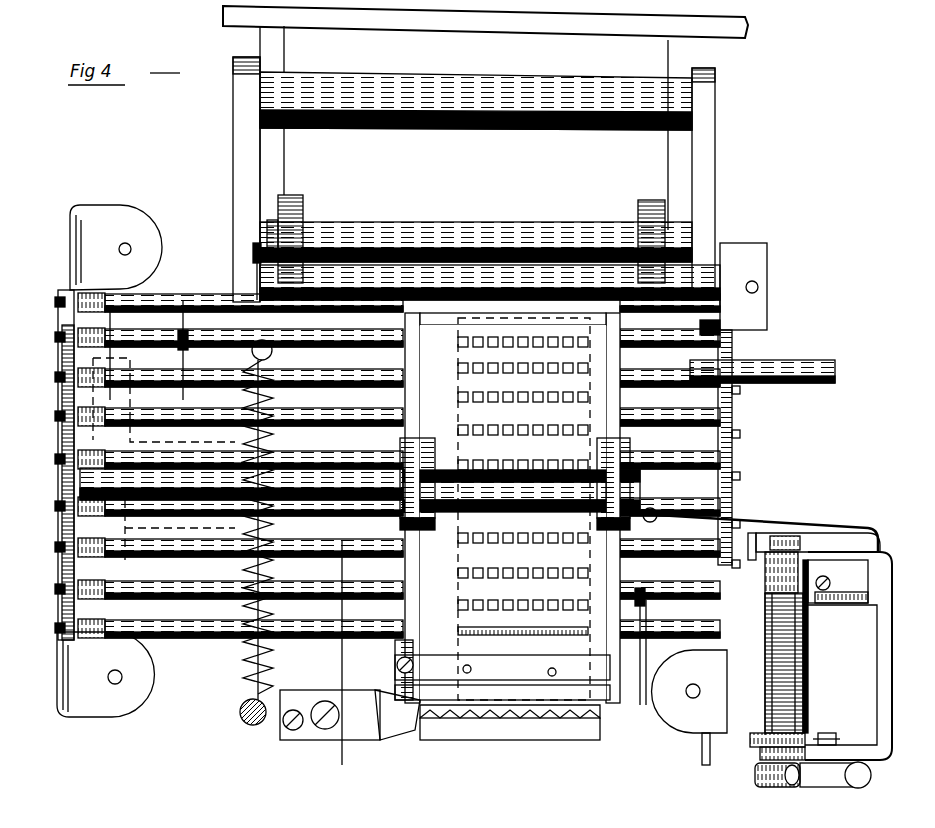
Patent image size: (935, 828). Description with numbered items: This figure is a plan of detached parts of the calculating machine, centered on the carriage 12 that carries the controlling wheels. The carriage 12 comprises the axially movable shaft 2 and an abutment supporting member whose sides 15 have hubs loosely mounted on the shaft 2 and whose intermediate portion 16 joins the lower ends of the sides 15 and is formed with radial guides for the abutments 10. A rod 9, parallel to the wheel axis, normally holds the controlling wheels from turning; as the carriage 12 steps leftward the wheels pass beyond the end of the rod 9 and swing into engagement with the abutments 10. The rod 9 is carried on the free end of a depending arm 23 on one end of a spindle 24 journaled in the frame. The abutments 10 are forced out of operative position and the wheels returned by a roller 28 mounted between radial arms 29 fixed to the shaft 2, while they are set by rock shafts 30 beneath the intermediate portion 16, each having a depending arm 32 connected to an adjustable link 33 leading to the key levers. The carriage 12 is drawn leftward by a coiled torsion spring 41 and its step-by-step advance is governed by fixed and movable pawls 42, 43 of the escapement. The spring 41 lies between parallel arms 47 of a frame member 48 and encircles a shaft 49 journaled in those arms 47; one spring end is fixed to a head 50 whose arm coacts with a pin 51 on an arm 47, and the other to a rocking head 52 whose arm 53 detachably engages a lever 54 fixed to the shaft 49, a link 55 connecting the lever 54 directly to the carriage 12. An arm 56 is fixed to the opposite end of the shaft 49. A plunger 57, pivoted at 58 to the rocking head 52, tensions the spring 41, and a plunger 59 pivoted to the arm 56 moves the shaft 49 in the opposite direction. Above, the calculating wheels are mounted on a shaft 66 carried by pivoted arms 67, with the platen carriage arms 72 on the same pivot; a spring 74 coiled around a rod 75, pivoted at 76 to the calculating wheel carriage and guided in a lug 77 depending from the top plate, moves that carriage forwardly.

The shaft 2 is at (130, 483).
The rod 9 is at (605, 330).
The abutments 10 is at (465, 428).
The carriage 12 is at (430, 396).
The sides 15 is at (410, 576).
The intermediate portion 16 is at (435, 367).
The depending arm 23 is at (700, 335).
The spindle 24 is at (780, 372).
The roller 28 is at (446, 645).
The radial arms 29 is at (625, 450).
The rock shafts 30 is at (146, 382).
The depending arm 32 is at (645, 601).
The links 33 is at (643, 706).
The spring 41 is at (805, 652).
The fixed pawl 42 is at (420, 740).
The movable pawl 43 is at (405, 740).
The arms 47 is at (798, 532).
The frame member 48 is at (884, 671).
The shaft 49 is at (765, 733).
The head 50 is at (765, 736).
The pin 51 is at (828, 733).
The rocking head 52 is at (768, 582).
The arm 53 is at (752, 532).
The lever 54 is at (840, 532).
The link 55 is at (776, 528).
The arm 56 is at (755, 776).
The plunger 57 is at (880, 591).
The pivot 58 is at (833, 584).
The plunger 59 is at (872, 776).
The shaft 66 is at (505, 234).
The arms 67 is at (305, 200).
The arms 72 is at (247, 150).
The spring 74 is at (245, 662).
The rod 75 is at (248, 684).
The pivot 76 is at (252, 253).
The lug 77 is at (241, 712).